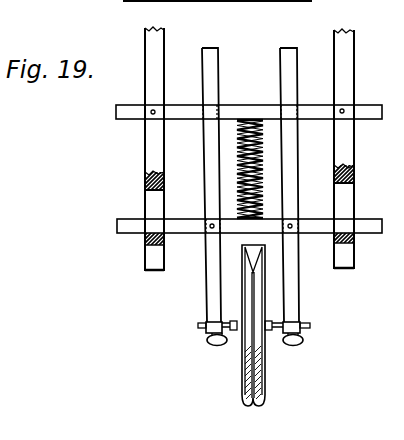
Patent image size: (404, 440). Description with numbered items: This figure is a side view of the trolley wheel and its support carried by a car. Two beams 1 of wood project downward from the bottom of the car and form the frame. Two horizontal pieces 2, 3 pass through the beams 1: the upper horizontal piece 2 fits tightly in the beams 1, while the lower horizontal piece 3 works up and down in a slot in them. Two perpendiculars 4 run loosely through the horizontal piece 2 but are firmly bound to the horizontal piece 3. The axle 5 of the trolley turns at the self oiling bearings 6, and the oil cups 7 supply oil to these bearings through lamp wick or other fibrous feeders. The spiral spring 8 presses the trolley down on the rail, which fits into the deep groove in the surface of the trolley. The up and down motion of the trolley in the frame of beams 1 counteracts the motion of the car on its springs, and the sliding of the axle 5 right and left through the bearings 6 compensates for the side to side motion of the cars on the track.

The beams 1 is at (155, 85).
The horizontal piece 2 is at (137, 101).
The horizontal piece 3 is at (131, 224).
The perpendiculars 4 is at (215, 101).
The axle 5 is at (197, 324).
The self oiling bearings 6 is at (213, 327).
The oil cups 7 is at (224, 344).
The spiral spring 8 is at (260, 193).